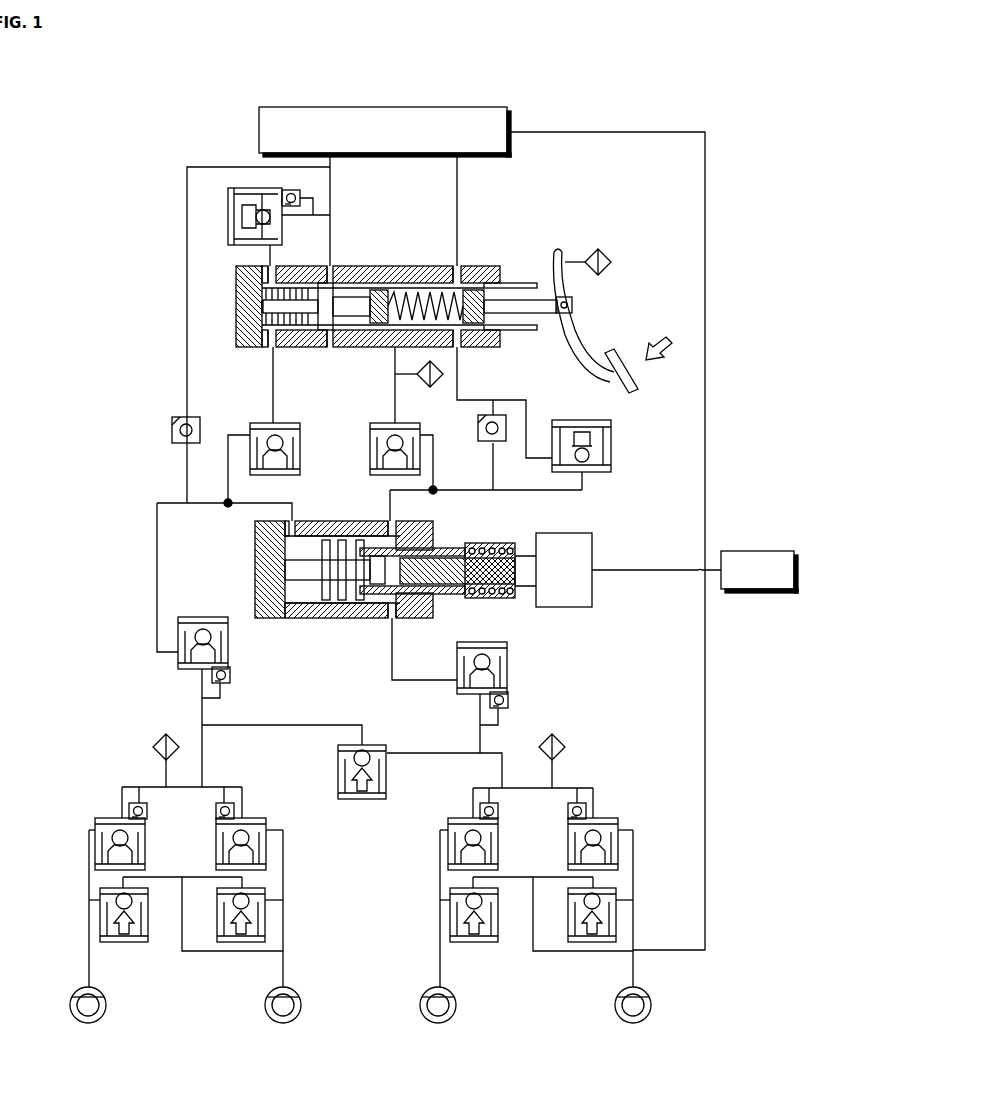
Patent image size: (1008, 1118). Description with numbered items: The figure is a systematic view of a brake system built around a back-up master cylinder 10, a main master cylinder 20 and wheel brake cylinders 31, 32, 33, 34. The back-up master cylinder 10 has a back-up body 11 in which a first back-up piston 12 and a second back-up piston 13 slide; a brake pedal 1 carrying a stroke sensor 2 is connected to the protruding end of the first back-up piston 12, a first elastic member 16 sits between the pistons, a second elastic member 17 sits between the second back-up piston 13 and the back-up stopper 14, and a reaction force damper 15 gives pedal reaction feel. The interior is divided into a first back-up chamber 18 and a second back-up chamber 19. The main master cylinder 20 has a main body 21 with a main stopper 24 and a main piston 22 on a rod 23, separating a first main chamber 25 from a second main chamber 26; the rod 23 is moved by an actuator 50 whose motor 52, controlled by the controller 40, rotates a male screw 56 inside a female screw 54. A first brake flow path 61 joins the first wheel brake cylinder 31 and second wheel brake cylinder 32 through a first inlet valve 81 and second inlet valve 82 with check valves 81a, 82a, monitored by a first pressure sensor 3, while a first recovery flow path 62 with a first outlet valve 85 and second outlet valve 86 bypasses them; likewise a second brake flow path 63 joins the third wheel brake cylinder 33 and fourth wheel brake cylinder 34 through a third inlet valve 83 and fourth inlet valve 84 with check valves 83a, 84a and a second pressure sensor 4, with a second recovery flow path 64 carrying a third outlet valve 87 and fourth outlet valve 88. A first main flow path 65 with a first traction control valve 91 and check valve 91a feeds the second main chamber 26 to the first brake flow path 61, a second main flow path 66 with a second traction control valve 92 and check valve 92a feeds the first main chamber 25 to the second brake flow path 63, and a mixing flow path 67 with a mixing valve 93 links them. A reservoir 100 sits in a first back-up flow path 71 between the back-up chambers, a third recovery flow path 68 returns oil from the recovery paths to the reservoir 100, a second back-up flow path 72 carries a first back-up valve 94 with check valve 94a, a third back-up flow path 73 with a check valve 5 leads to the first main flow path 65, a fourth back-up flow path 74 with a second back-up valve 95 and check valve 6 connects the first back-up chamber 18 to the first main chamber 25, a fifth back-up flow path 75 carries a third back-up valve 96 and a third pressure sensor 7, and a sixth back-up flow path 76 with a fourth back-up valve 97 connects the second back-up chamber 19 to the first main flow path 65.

The brake pedal 1 is at (612, 308).
The stroke sensor 2 is at (606, 256).
The first pressure sensor 3 is at (153, 739).
The second pressure sensor 4 is at (566, 742).
The check valve 5 is at (172, 430).
The check valve 6 is at (478, 427).
The third pressure sensor 7 is at (433, 387).
The back-up master cylinder 10 is at (377, 295).
The back-up body 11 is at (410, 266).
The first back-up piston 12 is at (512, 283).
The second back-up piston 13 is at (345, 266).
The back-up stopper 14 is at (236, 302).
The reaction force damper 15 is at (346, 330).
The first elastic member 16 is at (430, 266).
The second elastic member 17 is at (262, 347).
The first back-up chamber 18 is at (395, 266).
The second back-up chamber 19 is at (290, 347).
The main master cylinder 20 is at (372, 571).
The main body 21 is at (316, 521).
The main piston 22 is at (345, 540).
The rod 23 is at (442, 598).
The main stopper 24 is at (255, 558).
The first main chamber 25 is at (372, 610).
The second main chamber 26 is at (300, 610).
The first wheel brake cylinder 31 is at (88, 1023).
The second wheel brake cylinder 32 is at (283, 1023).
The third wheel brake cylinder 33 is at (438, 1023).
The fourth wheel brake cylinder 34 is at (633, 1023).
The controller 40 is at (780, 551).
The actuator 50 is at (618, 583).
The motor 52 is at (578, 534).
The female screw 54 is at (490, 545).
The male screw 56 is at (503, 596).
The first brake flow path 61 is at (82, 960).
The first recovery flow path 62 is at (165, 877).
The second brake flow path 63 is at (433, 960).
The second recovery flow path 64 is at (515, 877).
The first main flow path 65 is at (157, 522).
The second main flow path 66 is at (392, 650).
The mixing flow path 67 is at (305, 725).
The third recovery flow path 68 is at (535, 132).
The first back-up flow path 71 is at (457, 200).
The second back-up flow path 72 is at (268, 259).
The third back-up flow path 73 is at (203, 167).
The fourth back-up flow path 74 is at (458, 372).
The fifth back-up flow path 75 is at (395, 370).
The sixth back-up flow path 76 is at (273, 394).
The first inlet valve 81 is at (141, 828).
The check valve 81a is at (148, 808).
The second inlet valve 82 is at (226, 824).
The check valve 82a is at (216, 818).
The third inlet valve 83 is at (491, 828).
The check valve 83a is at (498, 808).
The fourth inlet valve 84 is at (579, 824).
The check valve 84a is at (568, 818).
The first outlet valve 85 is at (122, 942).
The second outlet valve 86 is at (242, 942).
The third outlet valve 87 is at (475, 942).
The fourth outlet valve 88 is at (593, 942).
The first traction control valve 91 is at (233, 680).
The check valve 91a is at (230, 676).
The second traction control valve 92 is at (509, 682).
The check valve 92a is at (508, 700).
The mixing valve 93 is at (362, 798).
The first back-up valve 94 is at (260, 205).
The check valve 94a is at (291, 193).
The second back-up valve 95 is at (611, 432).
The third back-up valve 96 is at (370, 428).
The fourth back-up valve 97 is at (250, 428).
The reservoir 100 is at (480, 106).